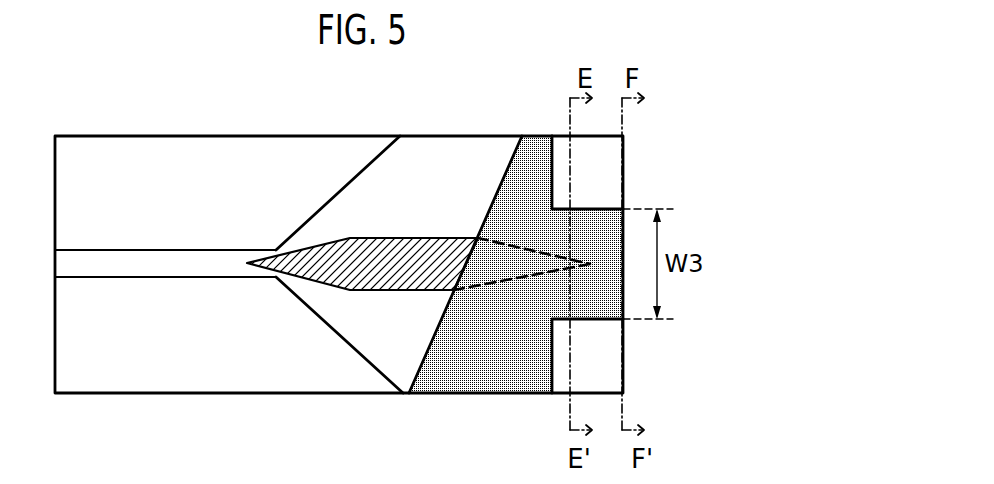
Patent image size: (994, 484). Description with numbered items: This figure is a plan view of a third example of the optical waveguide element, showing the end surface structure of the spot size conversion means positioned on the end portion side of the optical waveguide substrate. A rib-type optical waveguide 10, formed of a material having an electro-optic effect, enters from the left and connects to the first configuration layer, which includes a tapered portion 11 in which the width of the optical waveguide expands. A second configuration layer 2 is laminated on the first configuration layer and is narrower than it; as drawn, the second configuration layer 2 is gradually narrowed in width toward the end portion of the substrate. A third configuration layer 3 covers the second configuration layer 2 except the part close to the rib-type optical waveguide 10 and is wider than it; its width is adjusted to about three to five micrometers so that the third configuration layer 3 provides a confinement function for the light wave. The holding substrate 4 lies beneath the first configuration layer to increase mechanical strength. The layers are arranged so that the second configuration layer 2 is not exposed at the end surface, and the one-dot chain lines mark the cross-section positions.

The second configuration layer 2 is at (417, 248).
The third configuration layer 3 is at (493, 380).
The holding substrate 4 is at (203, 358).
The rib-type optical waveguide 10 is at (158, 250).
The tapered portion 11 is at (346, 186).